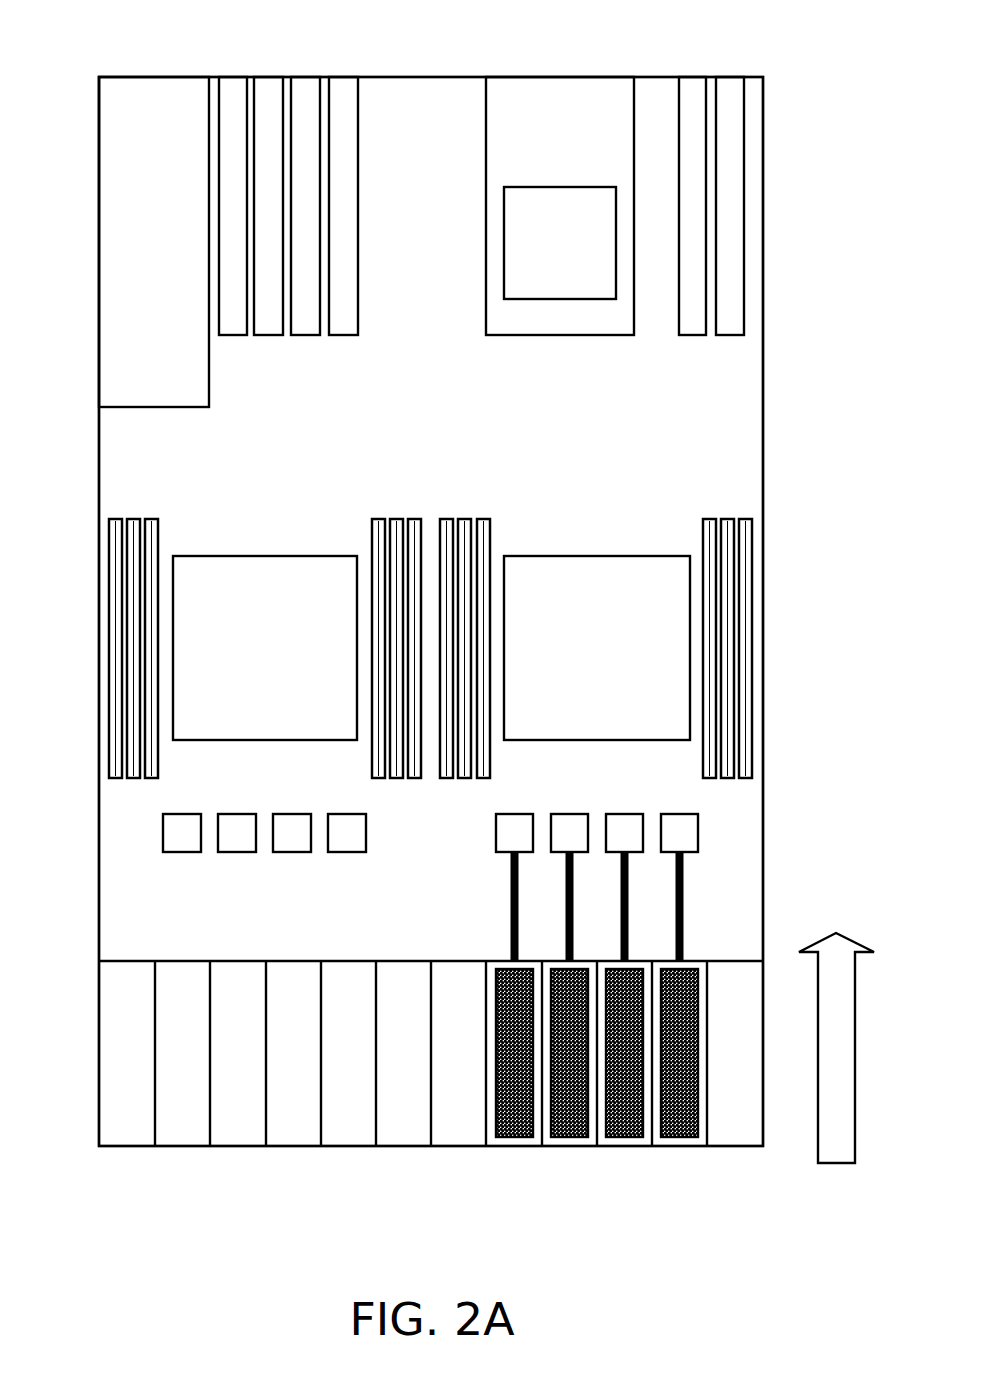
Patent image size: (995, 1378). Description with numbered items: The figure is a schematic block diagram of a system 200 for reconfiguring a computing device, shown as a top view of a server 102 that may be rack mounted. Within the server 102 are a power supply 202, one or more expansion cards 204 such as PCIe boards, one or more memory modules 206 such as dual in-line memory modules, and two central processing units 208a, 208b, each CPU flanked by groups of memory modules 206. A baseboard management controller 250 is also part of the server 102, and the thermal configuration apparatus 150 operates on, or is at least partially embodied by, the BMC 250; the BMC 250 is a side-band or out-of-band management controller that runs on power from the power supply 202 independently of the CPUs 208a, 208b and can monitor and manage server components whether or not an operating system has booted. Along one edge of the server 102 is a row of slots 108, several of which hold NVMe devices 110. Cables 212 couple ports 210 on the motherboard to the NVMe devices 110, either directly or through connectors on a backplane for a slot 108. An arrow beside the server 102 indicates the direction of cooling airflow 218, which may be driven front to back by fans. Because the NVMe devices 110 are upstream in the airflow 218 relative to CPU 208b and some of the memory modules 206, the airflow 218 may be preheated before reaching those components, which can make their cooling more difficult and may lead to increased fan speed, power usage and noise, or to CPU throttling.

The system 200 is at (86, 44).
The server 102 is at (403, 141).
The power supply 202 is at (135, 270).
The expansion cards 204 is at (333, 337).
The baseboard management controller 250 is at (540, 141).
The thermal configuration apparatus 150 is at (540, 256).
The memory modules 206 is at (490, 518).
The central processing unit 208a is at (238, 674).
The central processing unit 208b is at (570, 674).
The ports 210 is at (496, 826).
The cables 212 is at (510, 898).
The slots 108 is at (290, 1147).
The NVMe devices 110 is at (510, 1138).
The airflow 218 is at (836, 1164).